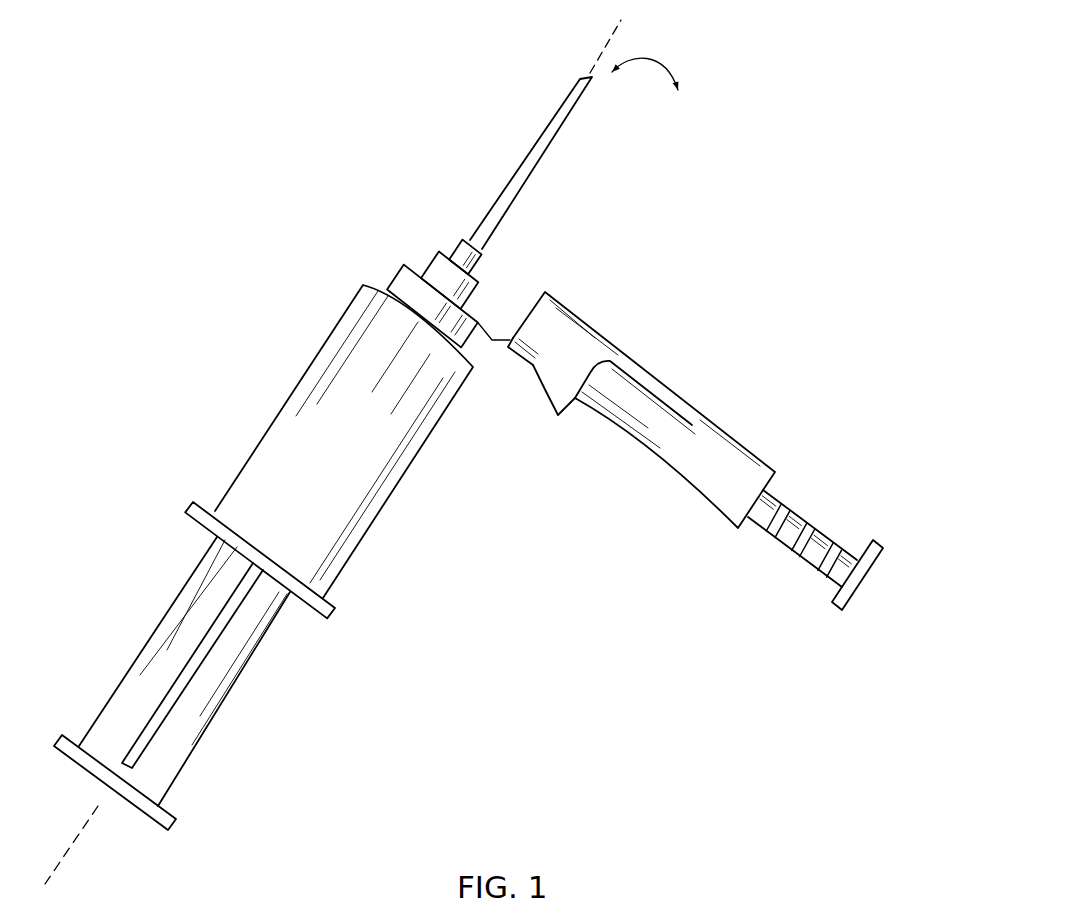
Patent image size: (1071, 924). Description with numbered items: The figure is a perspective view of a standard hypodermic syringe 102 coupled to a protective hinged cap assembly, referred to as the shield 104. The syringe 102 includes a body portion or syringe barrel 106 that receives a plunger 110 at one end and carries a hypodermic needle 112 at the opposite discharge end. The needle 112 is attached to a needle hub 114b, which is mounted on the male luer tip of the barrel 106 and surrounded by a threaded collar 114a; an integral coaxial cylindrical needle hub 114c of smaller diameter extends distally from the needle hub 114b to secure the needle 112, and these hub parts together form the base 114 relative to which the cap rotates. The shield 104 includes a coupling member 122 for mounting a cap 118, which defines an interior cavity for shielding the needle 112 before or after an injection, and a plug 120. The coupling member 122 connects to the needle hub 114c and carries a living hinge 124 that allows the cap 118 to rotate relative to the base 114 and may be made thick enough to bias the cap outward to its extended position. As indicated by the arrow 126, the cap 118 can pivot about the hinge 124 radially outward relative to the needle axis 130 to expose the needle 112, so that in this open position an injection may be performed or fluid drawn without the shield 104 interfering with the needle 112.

The hypodermic syringe 102 is at (218, 400).
The shield 104 is at (746, 384).
The syringe barrel 106 is at (355, 553).
The plunger 110 is at (220, 712).
The hypodermic needle 112 is at (547, 148).
The base 114 is at (400, 181).
The threaded collar 114a is at (394, 287).
The needle hub 114b is at (433, 262).
The coaxial cylindrical needle hub 114c is at (464, 243).
The cap 118 is at (602, 455).
The plug 120 is at (821, 510).
The coupling member 122 is at (480, 327).
The living hinge 124 is at (492, 341).
The arrow 126 is at (663, 65).
The needle axis 130 is at (603, 48).